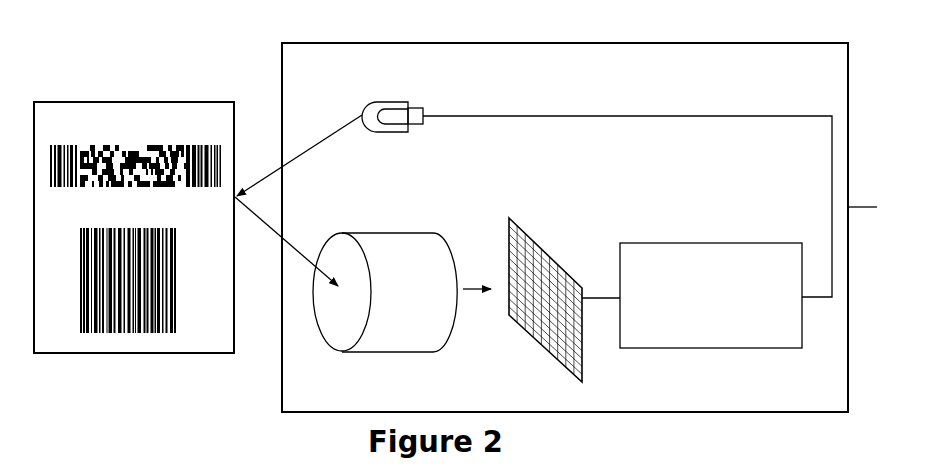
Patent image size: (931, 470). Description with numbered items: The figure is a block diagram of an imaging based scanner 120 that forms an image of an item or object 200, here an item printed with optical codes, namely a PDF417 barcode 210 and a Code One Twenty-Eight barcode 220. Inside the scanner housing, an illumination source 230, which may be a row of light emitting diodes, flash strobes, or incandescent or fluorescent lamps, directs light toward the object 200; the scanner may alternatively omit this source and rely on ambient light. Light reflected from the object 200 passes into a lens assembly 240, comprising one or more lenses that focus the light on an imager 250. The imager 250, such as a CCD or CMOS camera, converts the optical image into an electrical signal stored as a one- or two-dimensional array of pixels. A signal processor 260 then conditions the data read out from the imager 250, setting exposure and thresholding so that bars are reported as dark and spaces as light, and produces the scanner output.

The imaging based scanner 120 is at (838, 72).
The object 200 is at (230, 128).
The barcode 210 is at (128, 140).
The barcode 220 is at (128, 222).
The illumination source 230 is at (372, 108).
The lens assembly 240 is at (398, 322).
The imager 250 is at (545, 307).
The signal processor 260 is at (728, 332).